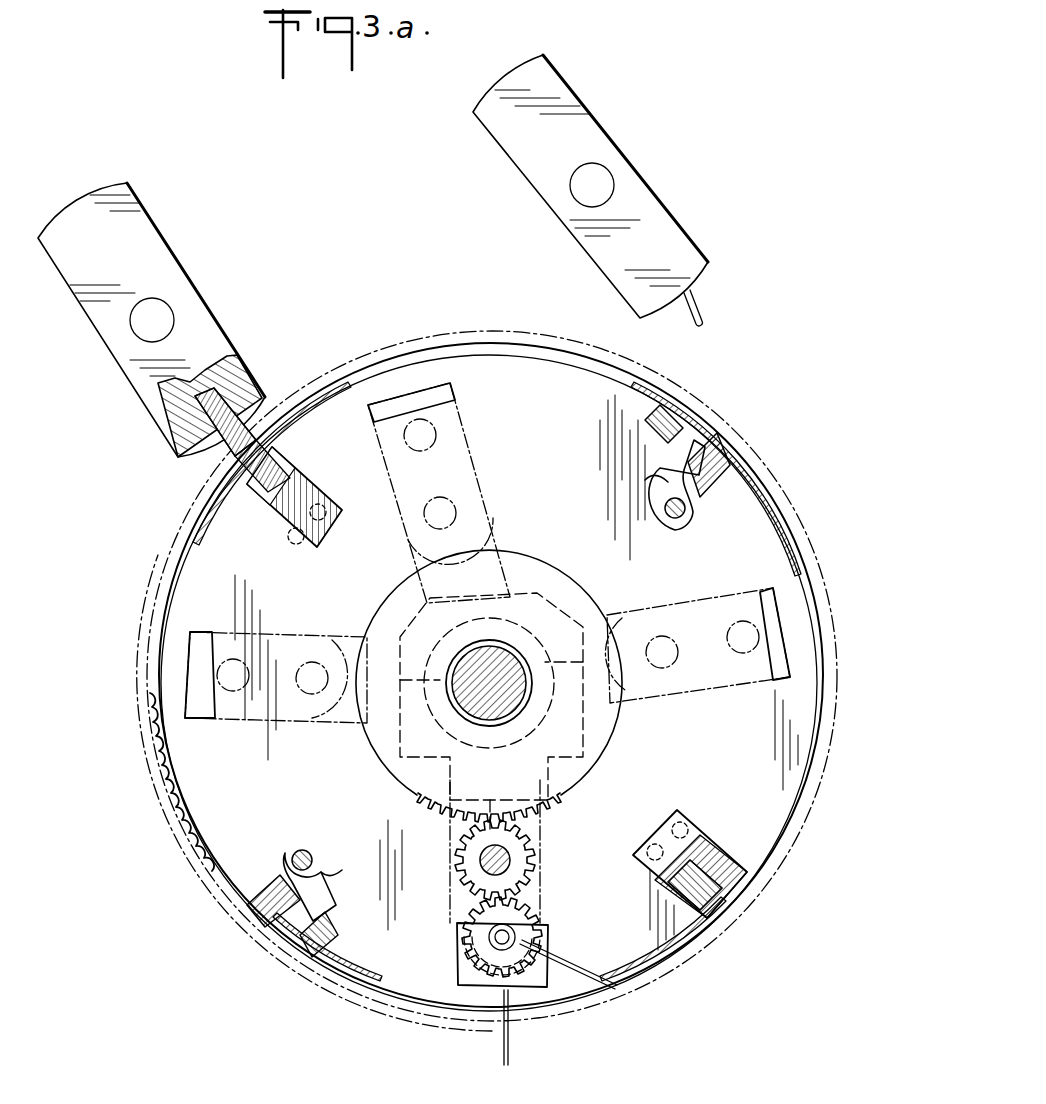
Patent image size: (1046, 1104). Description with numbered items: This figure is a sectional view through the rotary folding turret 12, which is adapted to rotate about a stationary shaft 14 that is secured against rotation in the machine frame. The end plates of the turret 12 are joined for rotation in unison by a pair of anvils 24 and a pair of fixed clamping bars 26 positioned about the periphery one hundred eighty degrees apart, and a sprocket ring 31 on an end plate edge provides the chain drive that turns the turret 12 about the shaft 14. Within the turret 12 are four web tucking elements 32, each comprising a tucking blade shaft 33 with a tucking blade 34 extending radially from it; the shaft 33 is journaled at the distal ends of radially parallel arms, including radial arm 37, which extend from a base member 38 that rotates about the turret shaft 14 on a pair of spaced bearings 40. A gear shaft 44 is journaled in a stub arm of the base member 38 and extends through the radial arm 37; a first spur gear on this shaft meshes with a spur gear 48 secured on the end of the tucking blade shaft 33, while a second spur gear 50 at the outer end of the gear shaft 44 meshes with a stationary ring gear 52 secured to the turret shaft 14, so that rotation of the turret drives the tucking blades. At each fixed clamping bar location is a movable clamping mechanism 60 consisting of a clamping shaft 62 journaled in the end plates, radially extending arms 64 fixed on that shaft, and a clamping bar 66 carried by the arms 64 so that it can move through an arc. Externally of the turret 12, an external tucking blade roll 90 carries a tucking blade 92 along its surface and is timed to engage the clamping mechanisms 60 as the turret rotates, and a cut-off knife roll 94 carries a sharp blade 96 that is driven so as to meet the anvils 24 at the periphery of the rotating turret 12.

The turret 12 is at (478, 324).
The stationary shaft 14 is at (470, 662).
The anvil 24 is at (705, 490).
The fixed clamping bar 26 is at (287, 478).
The sprocket ring 31 is at (150, 760).
The web tucking element 32 is at (491, 470).
The tucking blade shaft 33 is at (470, 978).
The tucking blade 34 is at (612, 987).
The radial arm 37 is at (455, 393).
The base member 38 is at (460, 806).
The bearing 40 is at (524, 650).
The gear shaft 44 is at (485, 858).
The spur gear 48 is at (520, 915).
The second spur gear 50 is at (515, 850).
The stationary ring gear 52 is at (560, 785).
The movable clamping mechanism 60 is at (642, 510).
The clamping shaft 62 is at (675, 518).
The radially extending arm 64 is at (648, 480).
The clamping bar 66 is at (688, 440).
The external tucking blade roll 90 is at (600, 140).
The tucking blade 92 is at (700, 300).
The cut-off knife roll 94 is at (158, 223).
The sharp blade 96 is at (232, 447).